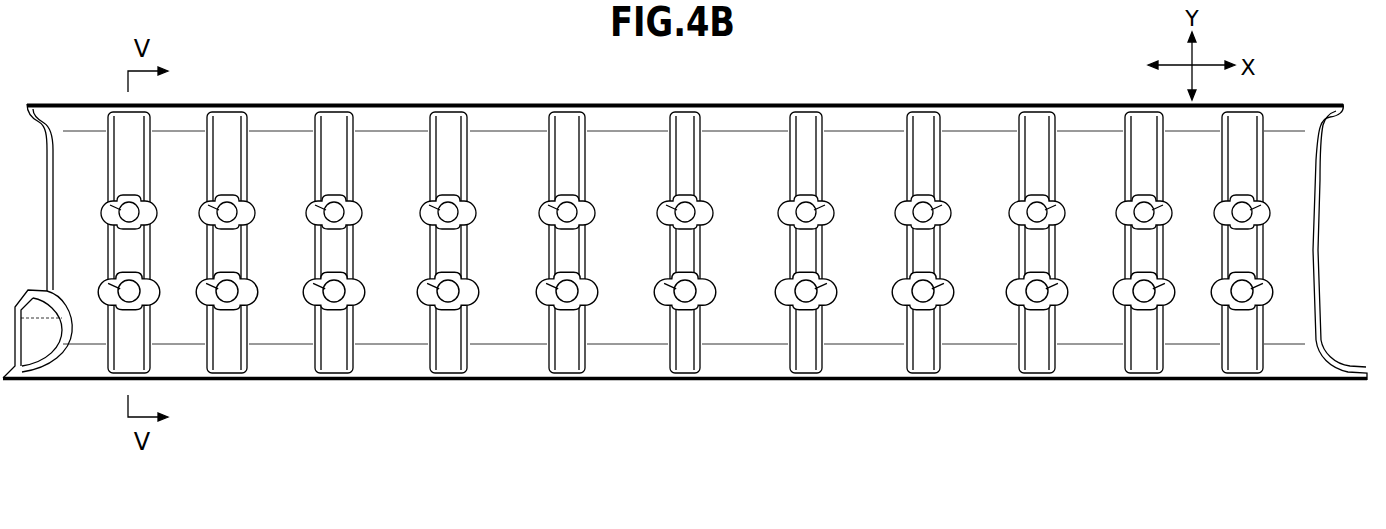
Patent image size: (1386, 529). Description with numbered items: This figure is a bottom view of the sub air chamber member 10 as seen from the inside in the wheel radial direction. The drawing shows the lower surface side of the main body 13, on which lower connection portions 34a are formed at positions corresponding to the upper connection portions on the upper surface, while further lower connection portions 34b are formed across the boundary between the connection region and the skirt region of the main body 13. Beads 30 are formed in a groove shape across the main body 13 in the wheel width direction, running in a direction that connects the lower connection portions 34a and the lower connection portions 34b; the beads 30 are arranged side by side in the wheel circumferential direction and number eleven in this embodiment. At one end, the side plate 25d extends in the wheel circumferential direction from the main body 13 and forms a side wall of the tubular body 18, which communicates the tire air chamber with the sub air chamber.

The sub air chamber member 10 is at (1006, 88).
The main body 13 is at (86, 150).
The tubular body 18 is at (47, 377).
The side plate 25d is at (618, 363).
The bead 30 is at (1040, 366).
The lower connection portion 34a is at (1020, 300).
The lower connection portion 34b is at (1020, 208).